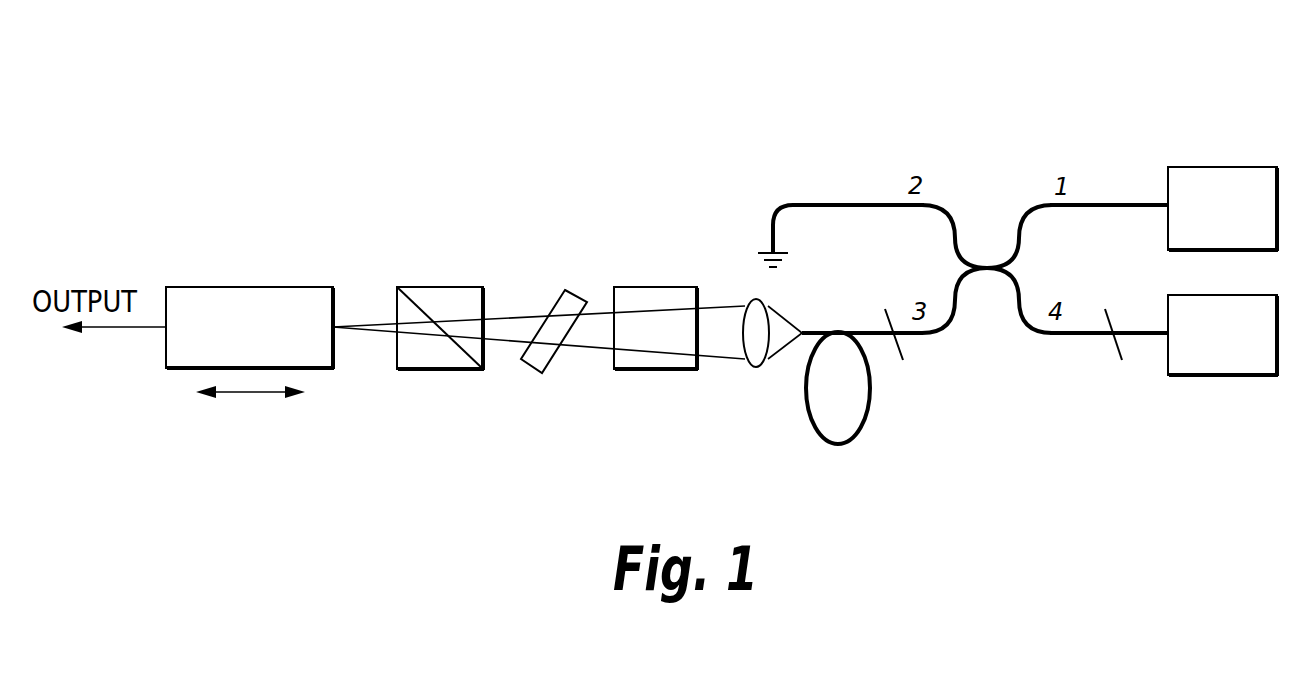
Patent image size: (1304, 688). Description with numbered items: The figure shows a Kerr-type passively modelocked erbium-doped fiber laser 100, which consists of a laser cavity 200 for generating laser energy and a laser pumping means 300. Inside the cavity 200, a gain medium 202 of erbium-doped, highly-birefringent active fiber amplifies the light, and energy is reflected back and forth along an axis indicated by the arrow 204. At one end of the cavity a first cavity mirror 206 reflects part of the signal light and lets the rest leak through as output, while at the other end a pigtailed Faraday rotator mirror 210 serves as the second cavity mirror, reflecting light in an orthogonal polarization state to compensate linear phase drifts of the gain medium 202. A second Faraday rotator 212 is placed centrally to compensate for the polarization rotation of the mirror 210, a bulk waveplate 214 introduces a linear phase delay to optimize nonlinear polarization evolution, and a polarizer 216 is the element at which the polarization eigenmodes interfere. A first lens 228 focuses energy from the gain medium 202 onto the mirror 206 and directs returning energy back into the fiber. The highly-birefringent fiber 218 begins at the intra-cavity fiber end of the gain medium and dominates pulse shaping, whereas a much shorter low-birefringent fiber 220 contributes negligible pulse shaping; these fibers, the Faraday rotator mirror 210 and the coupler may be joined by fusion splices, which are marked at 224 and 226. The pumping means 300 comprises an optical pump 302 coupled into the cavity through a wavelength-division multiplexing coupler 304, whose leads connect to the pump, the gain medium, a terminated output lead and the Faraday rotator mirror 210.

The passively modelocked laser 100 is at (859, 140).
The laser cavity 200 is at (1111, 438).
The gain medium 202 is at (838, 445).
The axis 204 is at (242, 396).
The first cavity mirror 206 is at (232, 287).
The Faraday rotator mirror 210 is at (1225, 377).
The second Faraday rotator 212 is at (684, 372).
The bulk waveplate 214 is at (543, 375).
The polarizer 216 is at (453, 372).
The highly-birefringent fiber 218 is at (860, 330).
The low-birefringent fiber 220 is at (945, 328).
The fiber splice 224 is at (904, 362).
The fiber splice 226 is at (1120, 362).
The first lens 228 is at (748, 308).
The laser pumping means 300 is at (1116, 140).
The pump 302 is at (1220, 167).
The wavelength-division multiplexing coupler 304 is at (1000, 168).